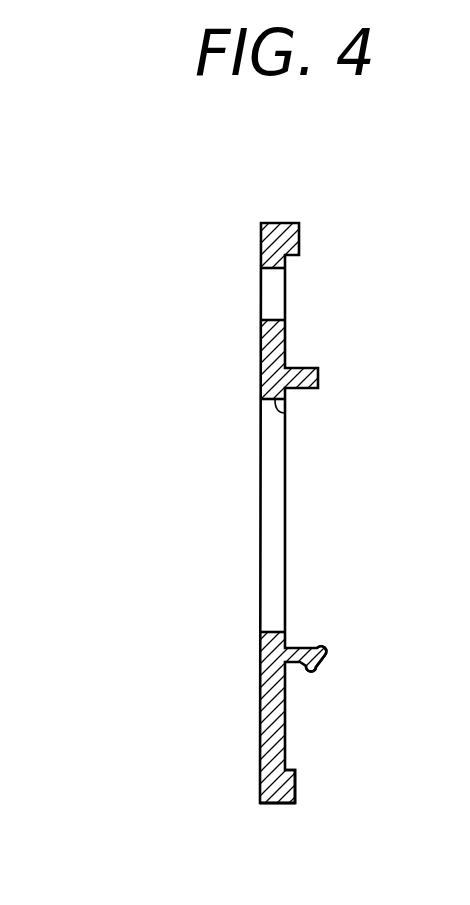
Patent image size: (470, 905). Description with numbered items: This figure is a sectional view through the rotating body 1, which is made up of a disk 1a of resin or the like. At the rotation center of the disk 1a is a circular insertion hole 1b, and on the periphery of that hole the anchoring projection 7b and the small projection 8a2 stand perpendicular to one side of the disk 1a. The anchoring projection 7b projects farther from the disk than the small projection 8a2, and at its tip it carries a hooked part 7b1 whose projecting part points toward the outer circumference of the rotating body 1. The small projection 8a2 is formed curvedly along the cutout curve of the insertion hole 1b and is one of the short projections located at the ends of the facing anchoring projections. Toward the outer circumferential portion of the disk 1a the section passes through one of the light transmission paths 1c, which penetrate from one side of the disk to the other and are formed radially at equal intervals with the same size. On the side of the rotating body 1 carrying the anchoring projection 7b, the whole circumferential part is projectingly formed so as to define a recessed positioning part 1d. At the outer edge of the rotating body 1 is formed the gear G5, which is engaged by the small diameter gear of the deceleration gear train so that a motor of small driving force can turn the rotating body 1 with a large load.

The rotating body 1 is at (318, 275).
The disk 1a is at (261, 733).
The insertion hole 1b is at (287, 417).
The light transmission path 1c is at (272, 292).
The recessed positioning part 1d is at (286, 742).
The anchoring projection 7b is at (311, 648).
The hooked part 7b1 is at (318, 666).
The small projection 8a2 is at (320, 373).
The gear G5 is at (275, 805).